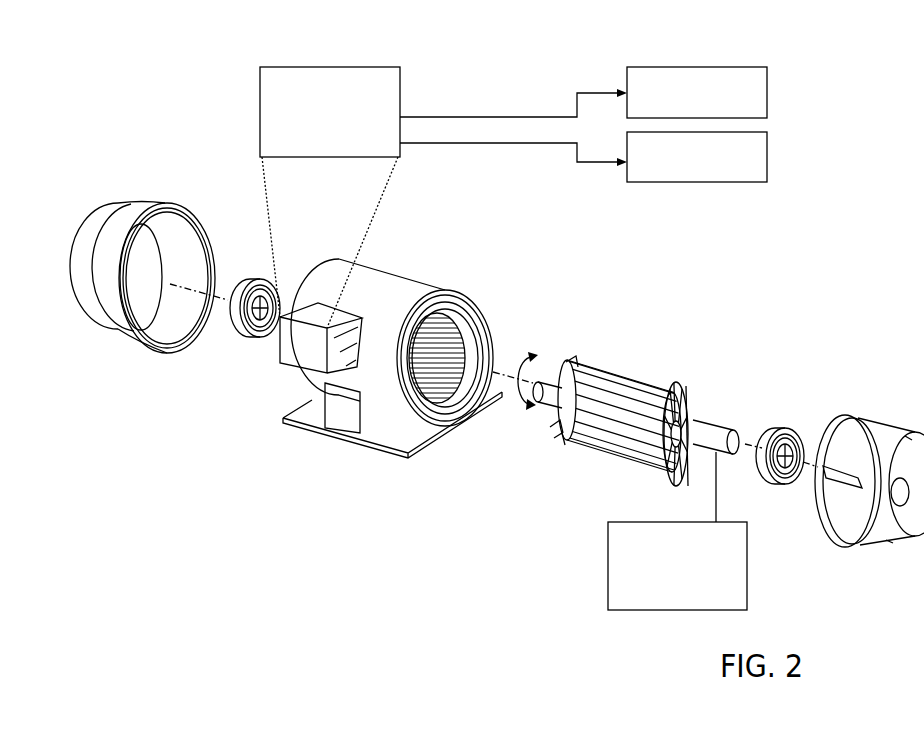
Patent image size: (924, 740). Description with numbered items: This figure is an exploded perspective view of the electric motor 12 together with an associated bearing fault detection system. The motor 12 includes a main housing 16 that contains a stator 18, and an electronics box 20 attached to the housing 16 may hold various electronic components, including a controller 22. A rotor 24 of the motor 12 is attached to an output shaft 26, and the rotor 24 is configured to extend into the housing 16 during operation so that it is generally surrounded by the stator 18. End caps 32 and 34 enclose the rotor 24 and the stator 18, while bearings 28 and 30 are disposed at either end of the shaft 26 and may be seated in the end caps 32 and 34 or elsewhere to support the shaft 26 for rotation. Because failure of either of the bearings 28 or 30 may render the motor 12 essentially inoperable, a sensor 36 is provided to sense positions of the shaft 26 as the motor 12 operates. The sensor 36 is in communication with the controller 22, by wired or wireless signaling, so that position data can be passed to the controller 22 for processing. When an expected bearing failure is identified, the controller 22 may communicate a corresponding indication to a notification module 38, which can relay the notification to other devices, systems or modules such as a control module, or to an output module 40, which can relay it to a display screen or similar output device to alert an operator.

The motor 12 is at (224, 190).
The main housing 16 is at (387, 393).
The stator 18 is at (435, 400).
The electronics box 20 is at (298, 360).
The controller 22 is at (400, 97).
The rotor 24 is at (652, 392).
The output shaft 26 is at (717, 435).
The bearing 28 is at (775, 428).
The bearing 30 is at (237, 333).
The end cap 32 is at (847, 537).
The end cap 34 is at (155, 215).
The sensor 36 is at (638, 612).
The notification module 38 is at (767, 92).
The output module 40 is at (767, 155).